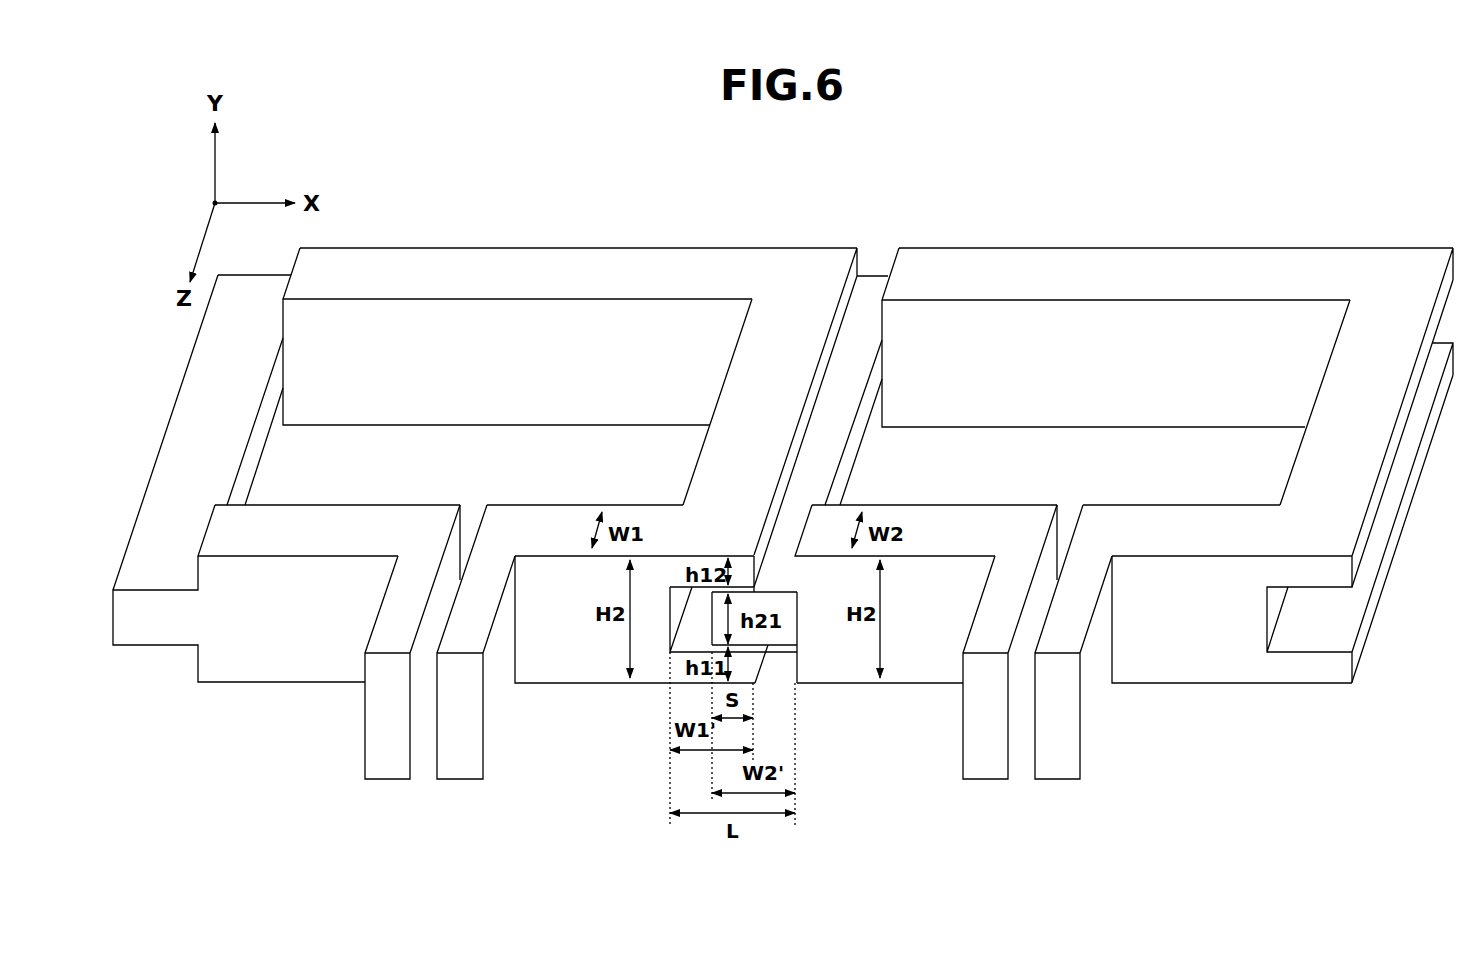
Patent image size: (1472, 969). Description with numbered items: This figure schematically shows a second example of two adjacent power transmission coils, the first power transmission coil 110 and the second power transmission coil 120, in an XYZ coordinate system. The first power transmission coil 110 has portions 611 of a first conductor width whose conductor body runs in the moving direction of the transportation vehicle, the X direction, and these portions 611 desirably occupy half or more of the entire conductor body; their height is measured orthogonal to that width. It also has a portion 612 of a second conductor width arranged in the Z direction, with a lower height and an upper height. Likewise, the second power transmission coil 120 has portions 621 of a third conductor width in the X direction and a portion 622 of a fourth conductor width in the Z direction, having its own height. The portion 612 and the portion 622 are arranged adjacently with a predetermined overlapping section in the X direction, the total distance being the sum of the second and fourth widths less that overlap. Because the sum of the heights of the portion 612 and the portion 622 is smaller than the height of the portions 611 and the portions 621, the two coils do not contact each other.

The first power transmission coil 110 is at (500, 469).
The second power transmission coil 120 is at (1124, 469).
The portions with the first conductor width W1 611 is at (538, 263).
The portion with the second conductor width W1' 612 is at (715, 460).
The portions with the third conductor width W2 621 is at (1136, 263).
The portion with the fourth conductor width W2' 622 is at (825, 465).